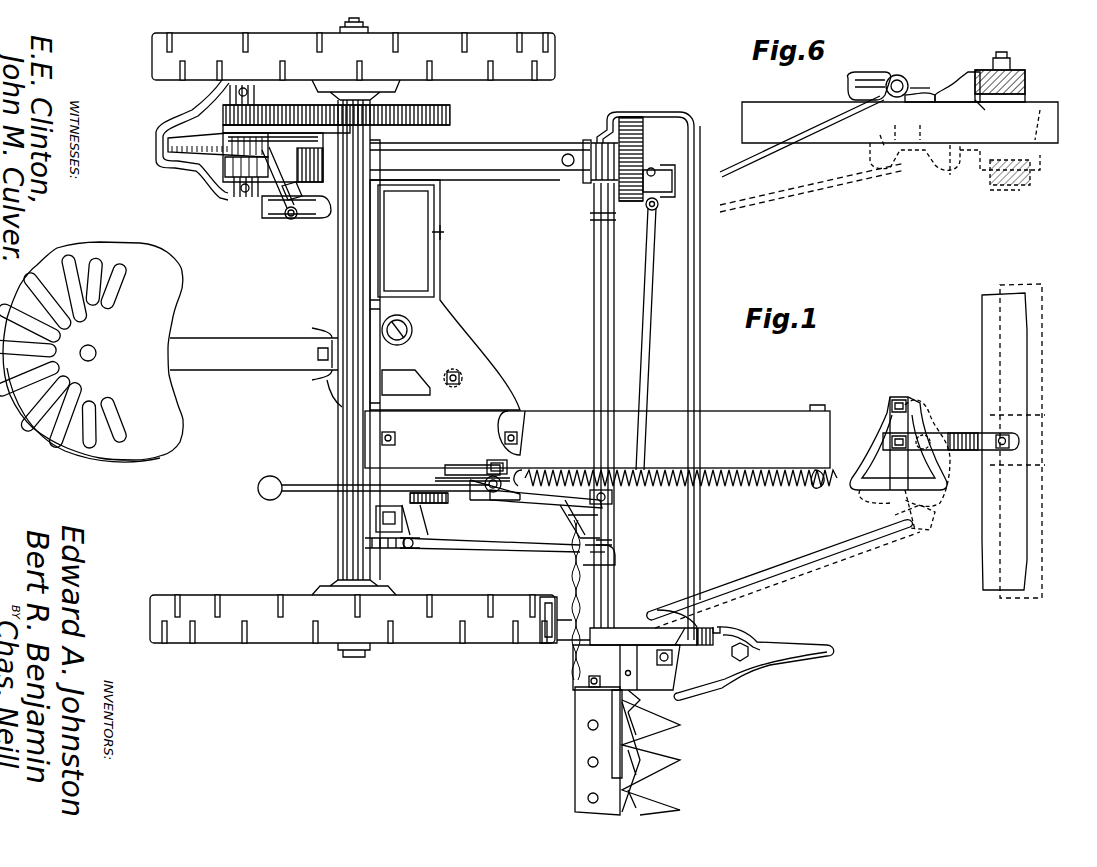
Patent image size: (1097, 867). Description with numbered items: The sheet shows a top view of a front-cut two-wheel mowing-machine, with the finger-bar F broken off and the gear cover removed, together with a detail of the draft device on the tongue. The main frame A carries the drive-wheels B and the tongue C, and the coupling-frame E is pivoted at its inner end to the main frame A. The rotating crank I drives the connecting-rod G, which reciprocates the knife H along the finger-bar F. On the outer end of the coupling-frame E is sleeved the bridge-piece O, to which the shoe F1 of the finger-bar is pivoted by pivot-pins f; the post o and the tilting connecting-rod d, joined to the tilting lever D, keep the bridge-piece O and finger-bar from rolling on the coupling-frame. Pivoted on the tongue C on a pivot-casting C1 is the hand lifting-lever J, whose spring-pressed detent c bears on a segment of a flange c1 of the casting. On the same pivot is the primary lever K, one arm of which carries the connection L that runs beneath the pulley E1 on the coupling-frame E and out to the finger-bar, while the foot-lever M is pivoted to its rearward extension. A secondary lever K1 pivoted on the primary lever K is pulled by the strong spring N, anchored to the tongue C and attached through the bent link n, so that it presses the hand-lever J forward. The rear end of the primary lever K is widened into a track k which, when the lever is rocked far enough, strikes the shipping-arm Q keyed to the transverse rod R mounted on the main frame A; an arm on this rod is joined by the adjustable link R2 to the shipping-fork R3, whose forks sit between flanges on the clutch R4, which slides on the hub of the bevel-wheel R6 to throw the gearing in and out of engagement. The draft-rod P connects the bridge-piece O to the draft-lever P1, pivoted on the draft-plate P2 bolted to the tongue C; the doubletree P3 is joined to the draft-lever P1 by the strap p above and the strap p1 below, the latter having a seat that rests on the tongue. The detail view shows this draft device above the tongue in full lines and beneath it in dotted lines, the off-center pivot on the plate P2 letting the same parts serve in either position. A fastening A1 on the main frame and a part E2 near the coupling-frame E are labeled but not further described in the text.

In FIG. 1, the drive-wheels B is at (548, 74).
In FIG. 1, the transverse rod R is at (228, 112).
In FIG. 1, the adjustable link R2 is at (306, 212).
In FIG. 1, the shipping-fork R3 is at (252, 203).
In FIG. 1, the clutch R4 is at (228, 163).
In FIG. 1, the bevel-wheel R6 is at (177, 153).
In FIG. 1, the main frame A is at (470, 160).
In FIG. 1, the frame bolt A1 is at (462, 380).
In FIG. 1, the rotating crank I is at (643, 160).
In FIG. 1, the coupling-frame E is at (598, 316).
In FIG. 1, the connecting-rod G is at (648, 330).
In FIG. 1, the foot-lever M is at (274, 477).
In FIG. 1, the bent link n is at (440, 476).
In FIG. 1, the hand lifting-lever J is at (465, 470).
In FIG. 1, the flange c1 is at (485, 460).
In FIG. 1, the pivot-casting C1 is at (519, 440).
In FIG. 1, the spring-pressed detent c is at (530, 466).
In FIG. 1, the tongue C is at (597, 436).
In FIG. 6, the tongue C is at (1040, 134).
In FIG. 1, the spring N is at (712, 482).
In FIG. 1, the draft-plate P2 is at (892, 405).
In FIG. 6, the draft-plate P2 is at (868, 82).
In FIG. 1, the strap p is at (940, 430).
In FIG. 6, the strap p is at (975, 70).
In FIG. 1, the doubletree P3 is at (1010, 390).
In FIG. 6, the doubletree P3 is at (1025, 80).
In FIG. 1, the track k is at (428, 505).
In FIG. 1, the secondary lever K1 is at (468, 504).
In FIG. 1, the primary lever K is at (512, 500).
In FIG. 1, the connecting link E2 is at (570, 508).
In FIG. 1, the pulley E1 is at (612, 510).
In FIG. 1, the post o is at (613, 556).
In FIG. 1, the tilting lever D is at (400, 548).
In FIG. 1, the shipping-arm Q is at (418, 506).
In FIG. 1, the tilting connecting-rod d is at (490, 555).
In FIG. 1, the connection L is at (585, 556).
In FIG. 1, the draft-rod P is at (783, 574).
In FIG. 6, the draft-rod P is at (802, 185).
In FIG. 1, the draft-lever P1 is at (910, 532).
In FIG. 6, the draft-lever P1 is at (912, 80).
In FIG. 1, the bridge-piece O is at (685, 615).
In FIG. 1, the pivot-pins f is at (718, 627).
In FIG. 1, the shoe F1 is at (728, 640).
In FIG. 1, the finger-bar F is at (590, 738).
In FIG. 1, the knife H is at (655, 772).
In FIG. 6, the strap p1 is at (982, 100).